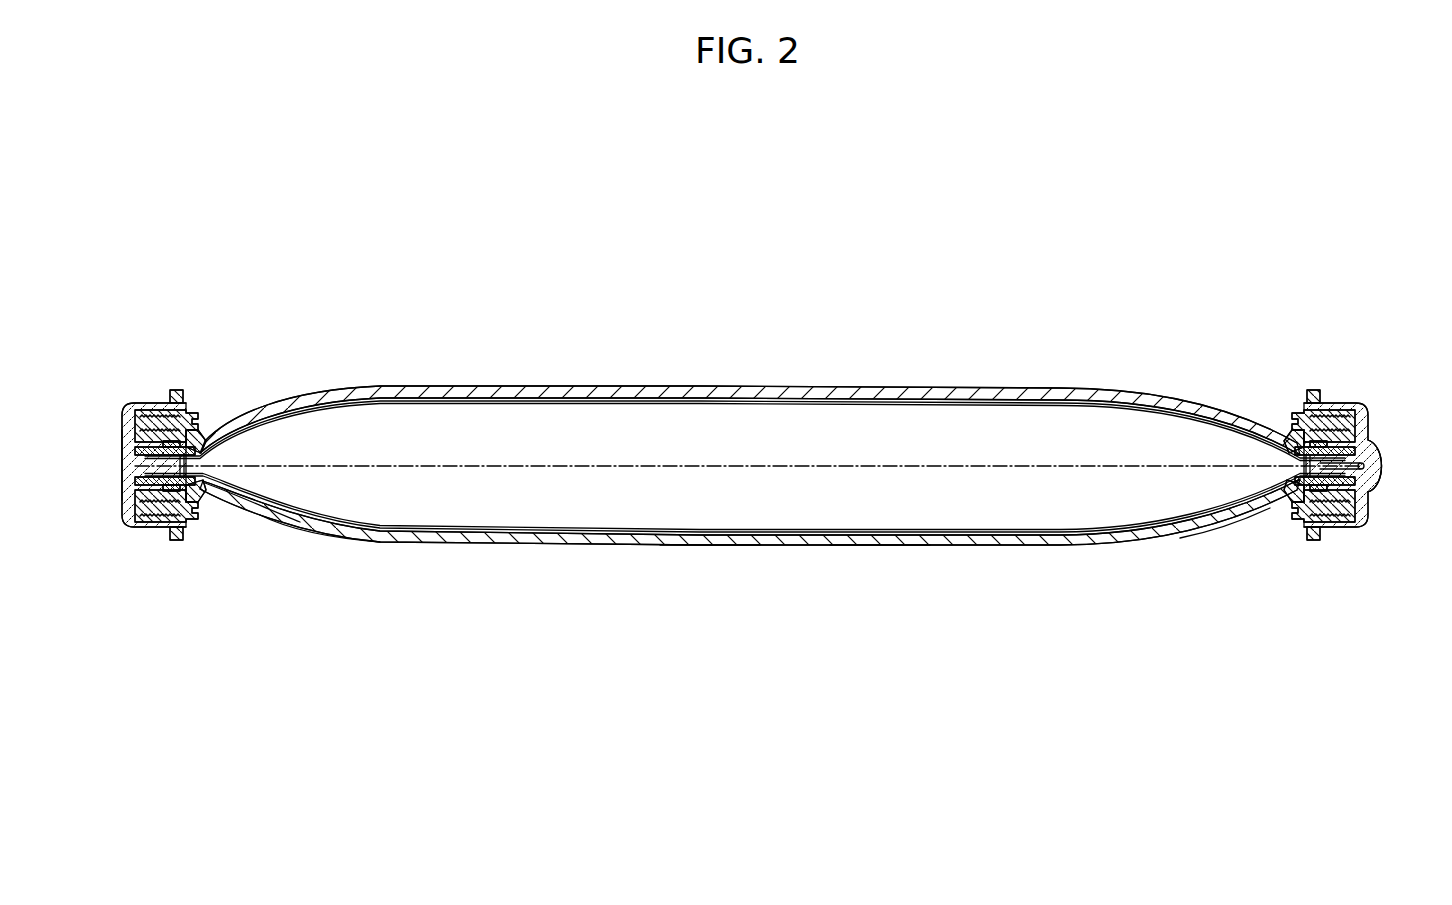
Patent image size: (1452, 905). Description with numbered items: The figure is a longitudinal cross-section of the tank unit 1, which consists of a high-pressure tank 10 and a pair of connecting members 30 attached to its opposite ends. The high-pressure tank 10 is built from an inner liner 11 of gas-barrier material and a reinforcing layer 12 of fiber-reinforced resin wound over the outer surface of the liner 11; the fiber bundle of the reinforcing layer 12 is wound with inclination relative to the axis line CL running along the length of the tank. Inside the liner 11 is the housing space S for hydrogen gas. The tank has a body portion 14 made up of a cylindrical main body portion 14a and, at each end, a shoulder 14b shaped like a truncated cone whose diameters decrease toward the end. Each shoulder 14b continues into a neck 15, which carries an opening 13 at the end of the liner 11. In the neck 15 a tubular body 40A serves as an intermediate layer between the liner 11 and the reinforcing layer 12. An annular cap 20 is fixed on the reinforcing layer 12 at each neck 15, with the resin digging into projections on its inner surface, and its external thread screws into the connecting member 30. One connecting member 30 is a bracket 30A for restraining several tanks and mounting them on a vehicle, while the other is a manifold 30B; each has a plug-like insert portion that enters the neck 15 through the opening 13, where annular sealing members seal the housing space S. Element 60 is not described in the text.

The tank unit 1 is at (997, 294).
The high-pressure tank 10 is at (757, 386).
The liner 11 is at (584, 529).
The reinforcing layer 12 is at (306, 538).
The opening 13 is at (145, 476).
The body portion 14 is at (703, 546).
The main body portion 14a is at (875, 546).
The shoulder 14b is at (228, 508).
The neck 15 is at (163, 494).
The cap 20 is at (181, 410).
The connecting member 30 is at (127, 420).
The bracket 30A is at (1372, 456).
The manifold 30B is at (128, 463).
The tubular body 40A is at (200, 444).
The seal ring 60 is at (166, 444).
The axis line CL is at (993, 462).
The housing space S is at (789, 497).